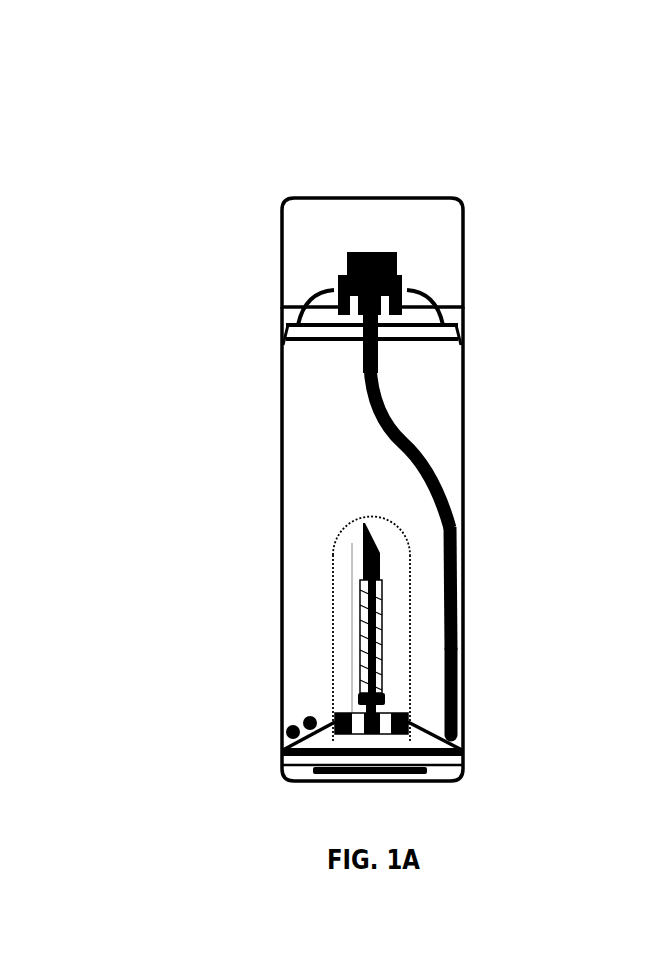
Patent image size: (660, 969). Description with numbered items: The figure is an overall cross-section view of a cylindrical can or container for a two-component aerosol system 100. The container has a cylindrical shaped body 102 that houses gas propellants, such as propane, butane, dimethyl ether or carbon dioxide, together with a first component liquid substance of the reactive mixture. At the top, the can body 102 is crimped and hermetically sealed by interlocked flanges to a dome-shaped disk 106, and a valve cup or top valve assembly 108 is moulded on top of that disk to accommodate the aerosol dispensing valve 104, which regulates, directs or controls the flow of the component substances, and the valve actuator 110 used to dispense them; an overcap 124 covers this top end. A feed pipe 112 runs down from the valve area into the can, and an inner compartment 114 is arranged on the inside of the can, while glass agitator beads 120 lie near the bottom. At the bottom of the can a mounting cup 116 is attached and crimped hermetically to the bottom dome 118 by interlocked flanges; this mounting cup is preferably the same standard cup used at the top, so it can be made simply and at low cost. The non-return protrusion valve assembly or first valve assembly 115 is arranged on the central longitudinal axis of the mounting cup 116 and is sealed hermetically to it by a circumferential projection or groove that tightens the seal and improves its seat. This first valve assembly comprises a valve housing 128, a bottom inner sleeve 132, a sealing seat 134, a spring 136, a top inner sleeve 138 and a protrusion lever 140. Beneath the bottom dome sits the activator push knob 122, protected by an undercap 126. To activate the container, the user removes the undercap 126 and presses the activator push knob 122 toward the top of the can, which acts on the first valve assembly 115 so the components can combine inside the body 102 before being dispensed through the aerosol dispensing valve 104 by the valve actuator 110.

The can or container for two-component aerosol system 100 is at (85, 46).
The cylindrical shaped body 102 is at (465, 365).
The aerosol dispensing valve 104 is at (417, 302).
The dome-shaped disk 106 is at (330, 316).
The valve cup or top valve assembly 108 is at (337, 290).
The valve actuator 110 is at (398, 262).
The feed pipe 112 is at (440, 475).
The inner compartment 114 is at (392, 530).
The non-return protrusion valve assembly or first valve assembly 115 is at (360, 640).
The mounting cup 116 is at (437, 733).
The bottom dome 118 is at (283, 748).
The glass agitator beads 120 is at (285, 728).
The activator push knob 122 is at (432, 775).
The overcap 124 is at (318, 198).
The undercap 126 is at (465, 768).
The valve housing 128 is at (362, 660).
The bottom inner sleeve 132 is at (410, 722).
The sealing seat 134 is at (368, 708).
The spring 136 is at (405, 685).
The top inner sleeve 138 is at (455, 548).
The protrusion lever 140 is at (333, 548).